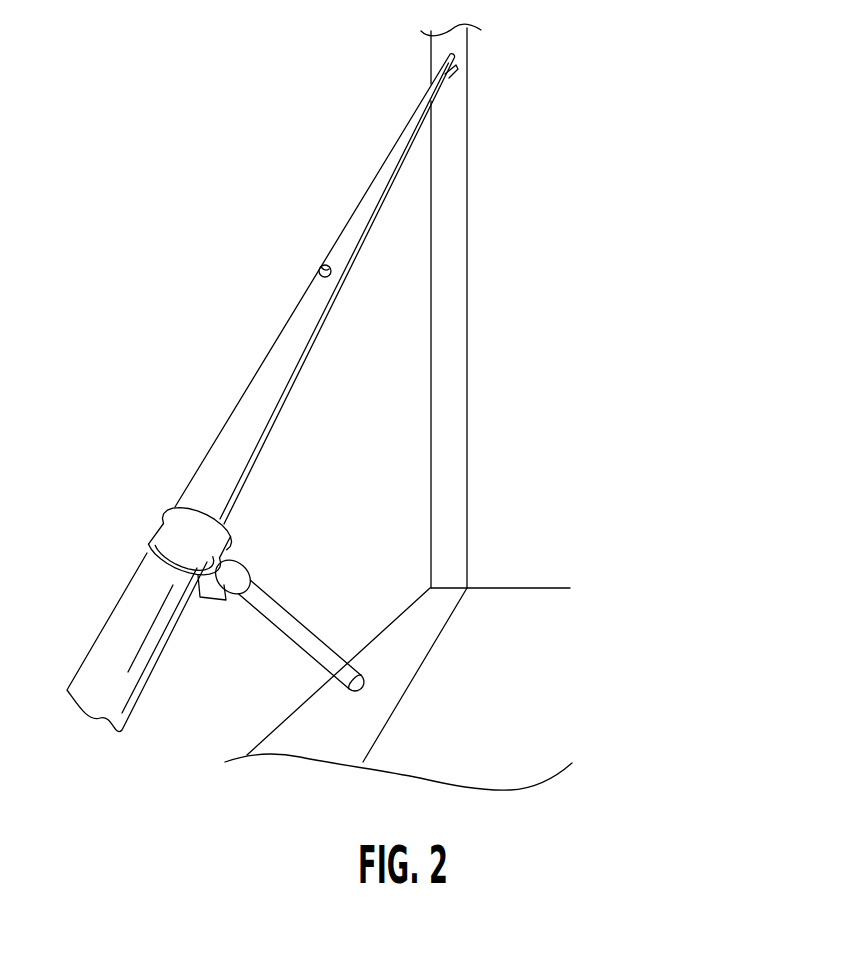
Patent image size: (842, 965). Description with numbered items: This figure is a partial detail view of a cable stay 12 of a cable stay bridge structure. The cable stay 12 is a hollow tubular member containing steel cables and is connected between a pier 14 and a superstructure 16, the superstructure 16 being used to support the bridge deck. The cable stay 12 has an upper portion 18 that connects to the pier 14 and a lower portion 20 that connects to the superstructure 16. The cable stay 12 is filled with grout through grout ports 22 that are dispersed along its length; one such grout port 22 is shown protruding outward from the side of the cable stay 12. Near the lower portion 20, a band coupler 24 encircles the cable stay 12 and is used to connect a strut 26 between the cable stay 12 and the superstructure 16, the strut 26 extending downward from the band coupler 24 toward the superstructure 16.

The cable stay 12 is at (272, 370).
The pier 14 is at (447, 193).
The superstructure 16 is at (411, 647).
The upper portion 18 is at (411, 82).
The lower portion 20 is at (101, 610).
The grout port 22 is at (319, 267).
The band coupler 24 is at (164, 530).
The strut 26 is at (289, 607).